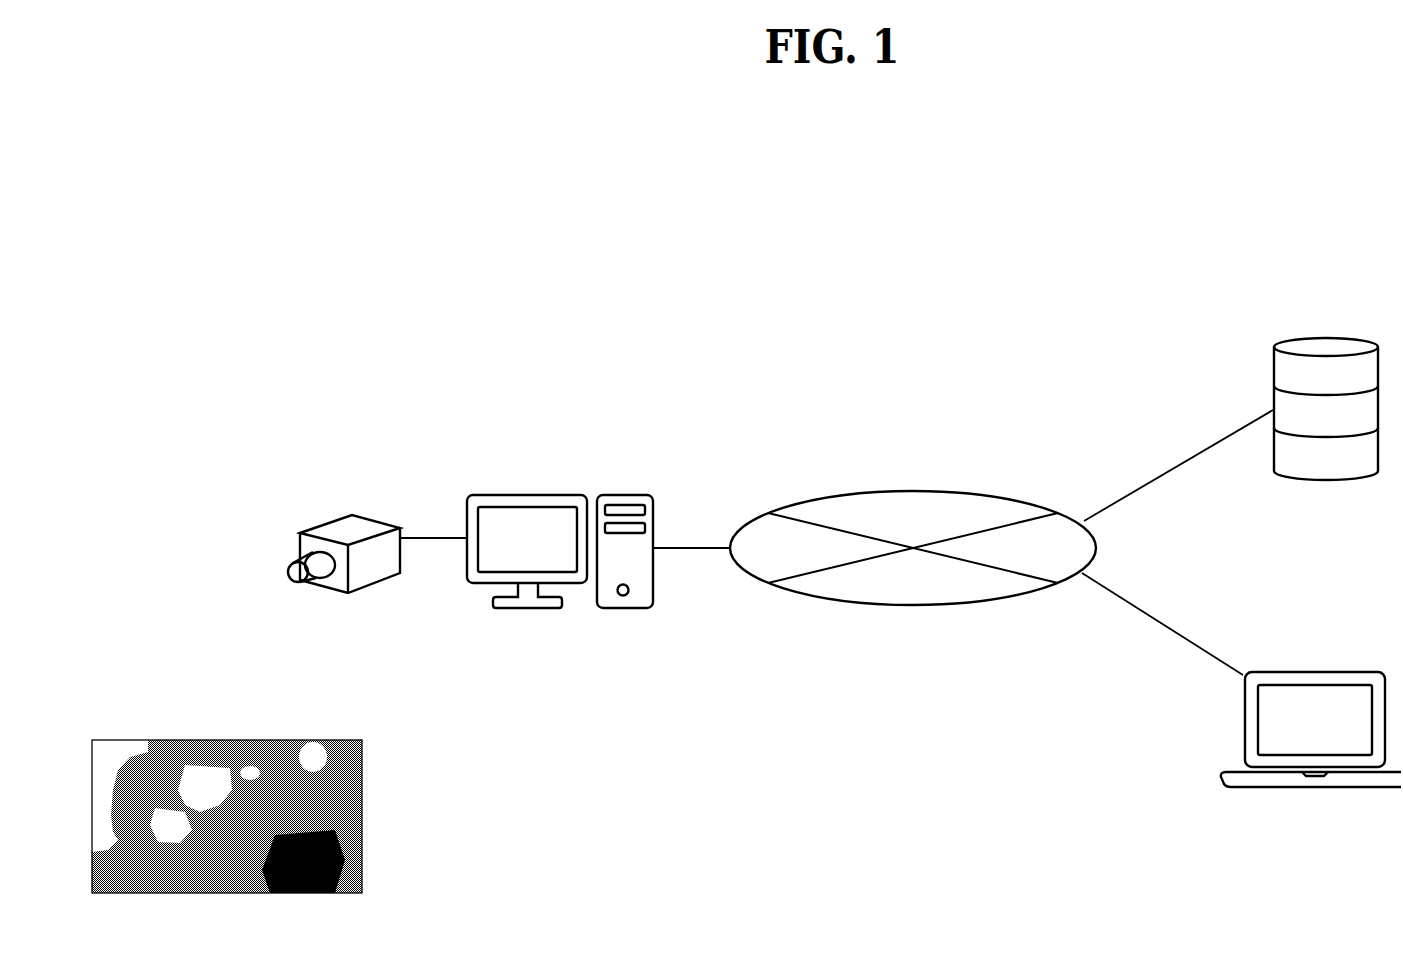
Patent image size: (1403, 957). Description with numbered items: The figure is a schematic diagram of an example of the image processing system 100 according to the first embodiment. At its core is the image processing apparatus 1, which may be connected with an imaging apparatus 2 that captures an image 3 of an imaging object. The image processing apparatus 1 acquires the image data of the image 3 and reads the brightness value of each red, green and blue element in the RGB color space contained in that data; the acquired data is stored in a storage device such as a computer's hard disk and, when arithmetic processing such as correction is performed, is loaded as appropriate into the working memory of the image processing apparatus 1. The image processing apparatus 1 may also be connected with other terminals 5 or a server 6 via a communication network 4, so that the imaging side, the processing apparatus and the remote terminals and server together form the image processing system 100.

The image processing system 100 is at (1108, 200).
The image processing apparatus 1 is at (623, 493).
The imaging apparatus 2 is at (352, 515).
The image 3 is at (303, 740).
The communication network 4 is at (927, 492).
The other terminals 5 is at (1325, 670).
The server 6 is at (1323, 338).